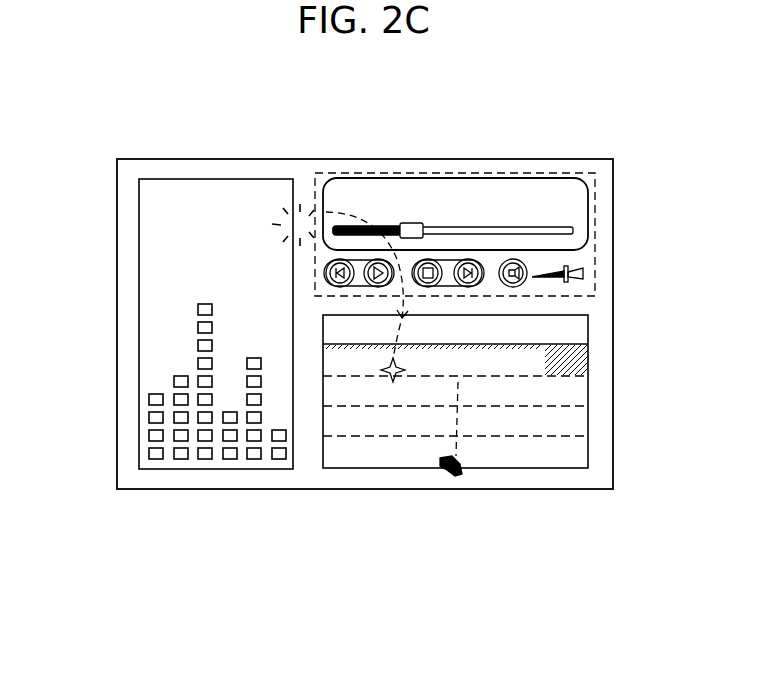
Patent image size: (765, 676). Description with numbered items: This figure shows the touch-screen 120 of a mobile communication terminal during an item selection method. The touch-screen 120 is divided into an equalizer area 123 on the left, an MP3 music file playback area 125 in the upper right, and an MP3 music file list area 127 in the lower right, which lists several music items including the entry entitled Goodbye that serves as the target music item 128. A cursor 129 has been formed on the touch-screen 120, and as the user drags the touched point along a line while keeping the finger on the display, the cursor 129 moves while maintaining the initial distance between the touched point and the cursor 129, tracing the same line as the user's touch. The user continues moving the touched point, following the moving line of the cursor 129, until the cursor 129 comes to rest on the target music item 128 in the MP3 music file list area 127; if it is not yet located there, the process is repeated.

The touch-screen 120 is at (260, 159).
The equalizer area 123 is at (139, 362).
The MP3 music file playback area 125 is at (556, 173).
The MP3 music file list area 127 is at (495, 380).
The target music item 128 is at (393, 462).
The cursor 129 is at (455, 470).